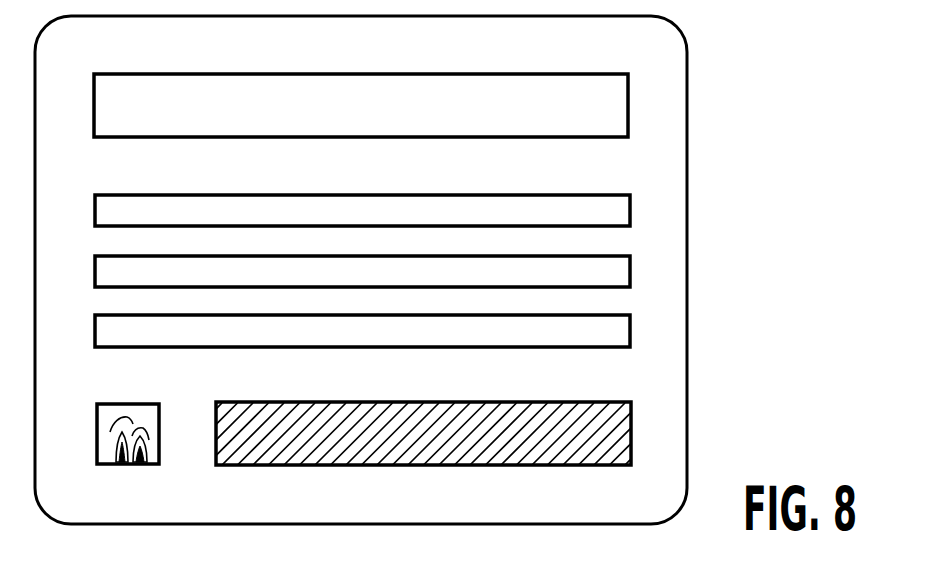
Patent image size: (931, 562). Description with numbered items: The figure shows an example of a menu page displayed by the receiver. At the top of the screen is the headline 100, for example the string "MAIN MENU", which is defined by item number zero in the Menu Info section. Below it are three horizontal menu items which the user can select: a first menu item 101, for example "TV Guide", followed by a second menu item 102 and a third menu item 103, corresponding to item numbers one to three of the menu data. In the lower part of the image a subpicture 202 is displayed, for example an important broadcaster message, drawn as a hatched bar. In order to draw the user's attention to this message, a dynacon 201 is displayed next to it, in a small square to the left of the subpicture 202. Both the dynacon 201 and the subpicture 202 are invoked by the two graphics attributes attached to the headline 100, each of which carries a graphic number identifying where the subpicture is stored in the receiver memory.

The headline 100 is at (628, 105).
The first menu item 101 is at (630, 213).
The second item display bar 102 is at (630, 271).
The third item display bar 103 is at (630, 333).
The dynacon 201 is at (126, 404).
The subpicture 202 is at (631, 423).